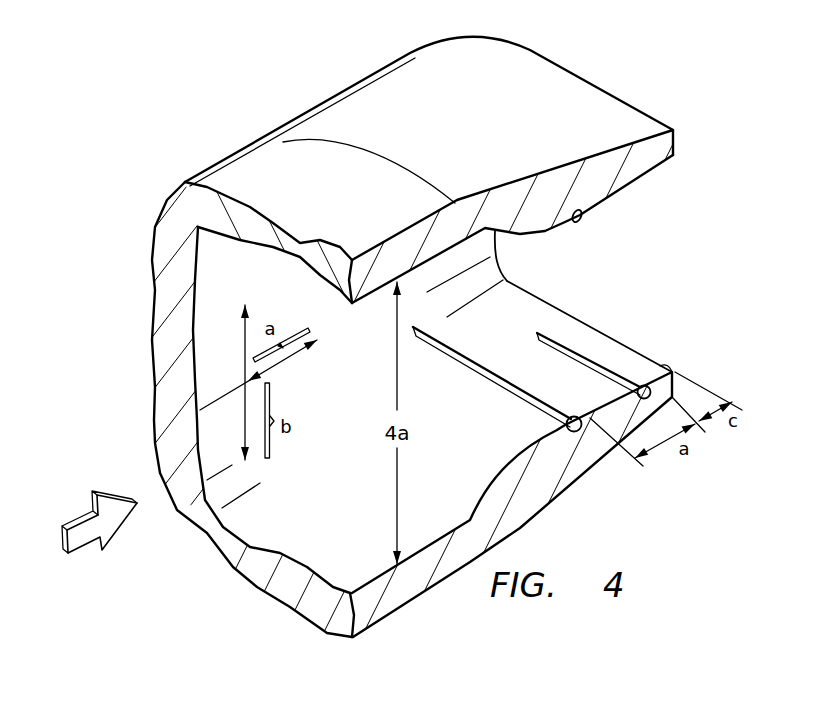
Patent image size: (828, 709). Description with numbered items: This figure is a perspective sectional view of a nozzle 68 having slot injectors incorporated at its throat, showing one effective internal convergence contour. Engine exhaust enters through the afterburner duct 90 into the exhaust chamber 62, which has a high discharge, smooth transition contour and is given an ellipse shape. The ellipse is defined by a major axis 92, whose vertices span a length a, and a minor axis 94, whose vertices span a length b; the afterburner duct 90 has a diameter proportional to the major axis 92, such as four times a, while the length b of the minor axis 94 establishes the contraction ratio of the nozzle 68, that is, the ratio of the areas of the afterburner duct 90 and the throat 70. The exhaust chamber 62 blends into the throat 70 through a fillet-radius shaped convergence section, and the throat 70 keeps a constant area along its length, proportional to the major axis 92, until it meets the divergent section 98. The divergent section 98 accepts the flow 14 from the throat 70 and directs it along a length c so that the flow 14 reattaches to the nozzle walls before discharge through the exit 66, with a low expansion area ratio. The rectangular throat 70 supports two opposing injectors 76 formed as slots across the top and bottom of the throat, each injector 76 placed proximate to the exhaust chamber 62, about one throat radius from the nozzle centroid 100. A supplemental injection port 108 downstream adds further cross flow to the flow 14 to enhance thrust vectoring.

The flow 14 is at (105, 533).
The exhaust chamber 62 is at (332, 541).
The exit 66 is at (652, 257).
The nozzle 68 is at (647, 88).
The throat 70 is at (578, 392).
The injector 76 is at (580, 229).
The afterburner duct 90 is at (222, 593).
The major axis 92 is at (268, 308).
The minor axis 94 is at (293, 444).
The divergent section 98 is at (678, 377).
The centroid 100 is at (314, 373).
The supplemental injection port 108 is at (593, 360).